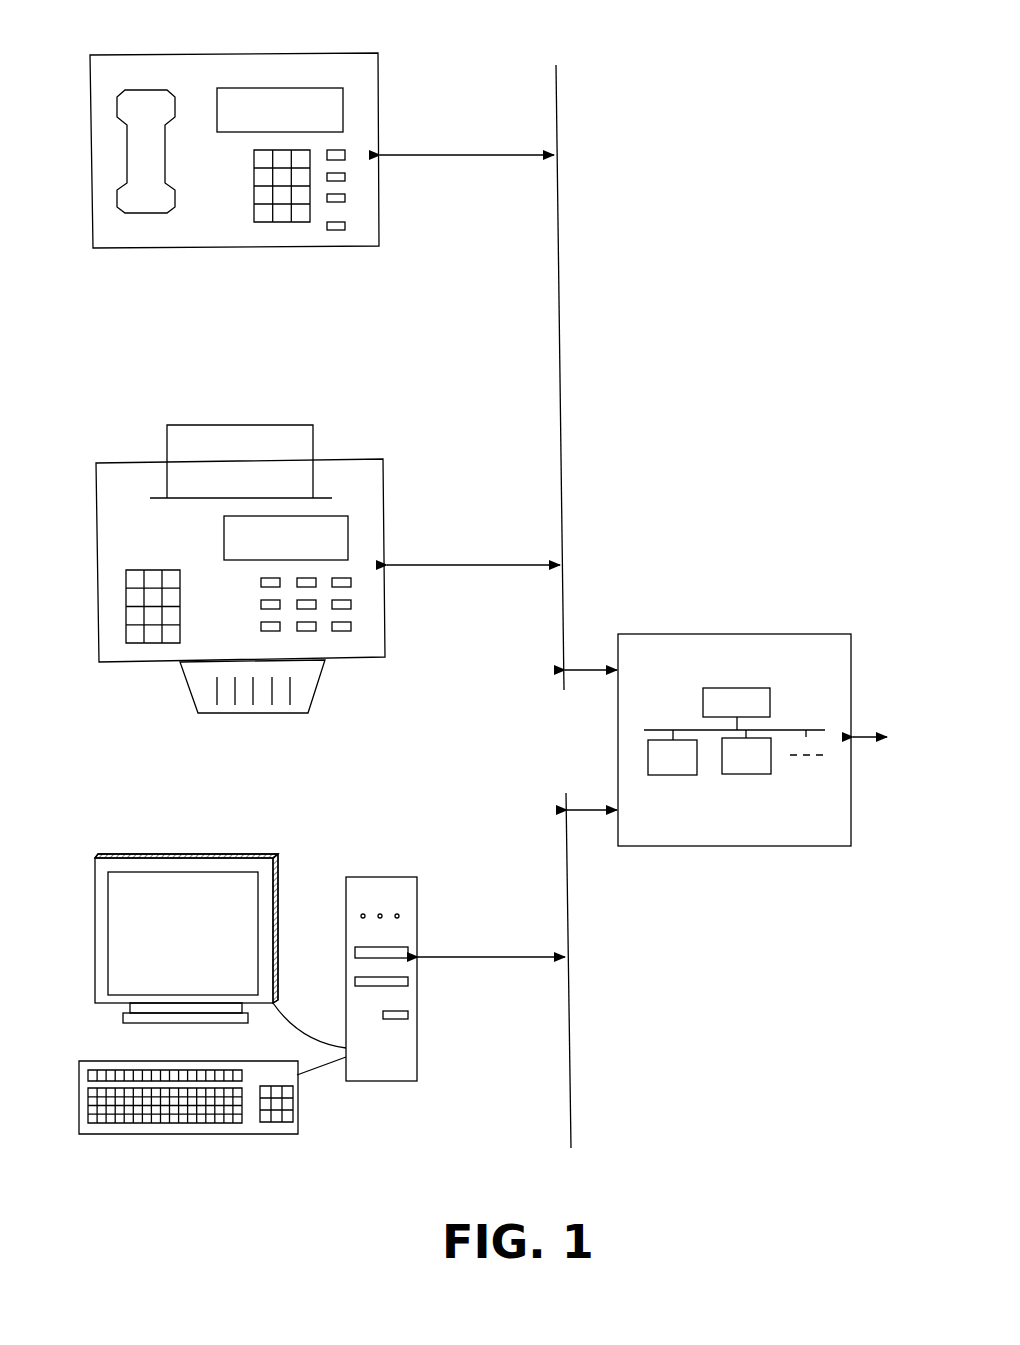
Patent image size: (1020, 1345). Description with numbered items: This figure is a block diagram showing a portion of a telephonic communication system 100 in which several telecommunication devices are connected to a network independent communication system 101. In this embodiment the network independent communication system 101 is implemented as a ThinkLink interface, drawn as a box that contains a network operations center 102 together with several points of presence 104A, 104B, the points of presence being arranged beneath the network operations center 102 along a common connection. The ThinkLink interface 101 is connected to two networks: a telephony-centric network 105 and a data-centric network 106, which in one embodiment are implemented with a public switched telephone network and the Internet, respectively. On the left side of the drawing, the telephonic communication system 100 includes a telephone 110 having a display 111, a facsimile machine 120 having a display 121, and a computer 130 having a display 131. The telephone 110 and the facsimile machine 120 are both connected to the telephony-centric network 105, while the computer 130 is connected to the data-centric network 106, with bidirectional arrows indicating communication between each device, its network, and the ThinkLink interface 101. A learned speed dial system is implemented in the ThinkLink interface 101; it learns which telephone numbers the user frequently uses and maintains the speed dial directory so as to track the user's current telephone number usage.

The telephonic communication system 100 is at (675, 40).
The network independent communication system 101 is at (734, 765).
The network operations center 102 is at (771, 708).
The point of presence 104A is at (669, 775).
The point of presence 104B is at (745, 774).
The telephony-centric network 105 is at (560, 375).
The data-centric network 106 is at (567, 980).
The telephone 110 is at (261, 150).
The display 111 is at (237, 133).
The facsimile machine 120 is at (268, 569).
The display 121 is at (224, 524).
The computer 130 is at (235, 959).
The display 131 is at (95, 900).